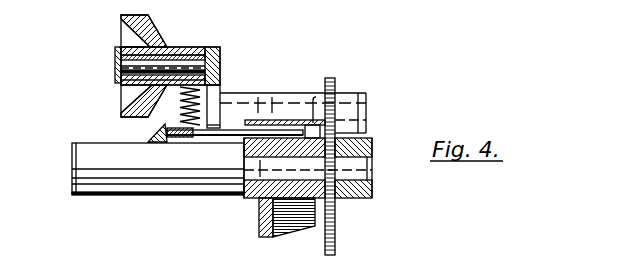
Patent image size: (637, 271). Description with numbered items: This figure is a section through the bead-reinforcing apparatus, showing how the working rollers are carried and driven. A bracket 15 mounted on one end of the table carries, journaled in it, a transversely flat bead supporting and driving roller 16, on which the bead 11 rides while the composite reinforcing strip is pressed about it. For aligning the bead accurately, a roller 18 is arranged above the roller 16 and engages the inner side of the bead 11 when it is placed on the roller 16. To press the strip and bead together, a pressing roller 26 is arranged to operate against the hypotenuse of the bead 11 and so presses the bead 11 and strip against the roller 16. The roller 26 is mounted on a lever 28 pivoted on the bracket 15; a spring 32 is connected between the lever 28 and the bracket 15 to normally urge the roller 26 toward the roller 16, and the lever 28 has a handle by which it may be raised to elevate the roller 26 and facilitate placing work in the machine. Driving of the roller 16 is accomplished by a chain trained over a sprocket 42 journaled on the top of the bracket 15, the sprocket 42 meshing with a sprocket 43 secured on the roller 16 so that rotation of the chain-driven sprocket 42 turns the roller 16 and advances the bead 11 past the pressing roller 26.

The bead 11 is at (150, 136).
The bracket 15 is at (259, 230).
The bead supporting and driving rollers 16 is at (88, 186).
The aligning rollers 18 is at (169, 138).
The pressing rollers 26 is at (155, 31).
The lever 28 is at (212, 47).
The spring 32 is at (200, 100).
The sprocket 42 is at (336, 79).
The sprocket 43 is at (336, 226).